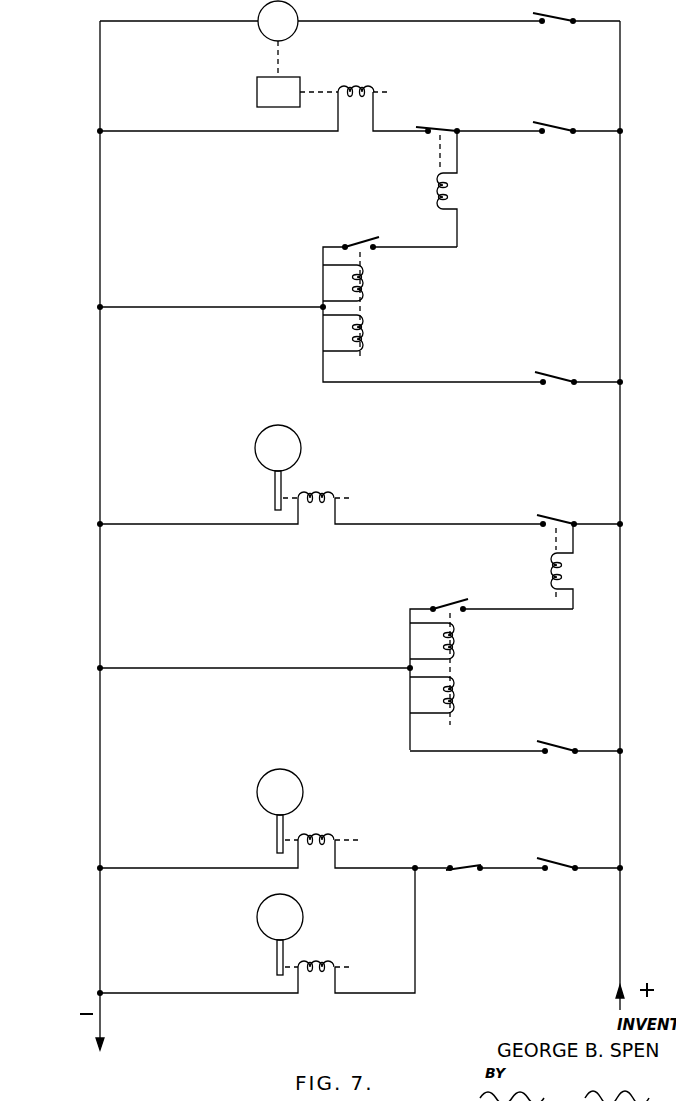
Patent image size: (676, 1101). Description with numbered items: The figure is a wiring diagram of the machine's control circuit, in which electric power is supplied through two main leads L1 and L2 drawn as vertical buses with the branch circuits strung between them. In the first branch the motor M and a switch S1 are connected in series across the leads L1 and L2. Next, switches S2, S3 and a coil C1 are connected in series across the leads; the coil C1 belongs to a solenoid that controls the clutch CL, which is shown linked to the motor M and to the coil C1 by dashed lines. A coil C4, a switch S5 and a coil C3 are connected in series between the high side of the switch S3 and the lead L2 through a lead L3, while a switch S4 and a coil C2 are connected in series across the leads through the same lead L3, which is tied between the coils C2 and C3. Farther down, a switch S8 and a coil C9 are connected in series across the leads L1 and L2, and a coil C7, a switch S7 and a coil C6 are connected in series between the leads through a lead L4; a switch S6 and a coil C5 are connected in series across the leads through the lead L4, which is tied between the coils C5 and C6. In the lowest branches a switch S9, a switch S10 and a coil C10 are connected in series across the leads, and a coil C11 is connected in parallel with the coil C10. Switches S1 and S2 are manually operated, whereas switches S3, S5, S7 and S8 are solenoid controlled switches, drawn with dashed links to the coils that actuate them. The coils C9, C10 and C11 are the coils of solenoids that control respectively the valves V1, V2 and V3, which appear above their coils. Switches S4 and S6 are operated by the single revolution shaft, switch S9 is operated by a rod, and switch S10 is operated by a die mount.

The main lead L1 is at (620, 655).
The main lead L2 is at (100, 590).
The lead L3 is at (198, 307).
The lead L4 is at (212, 668).
The switch S1 is at (554, 31).
The switch S2 is at (554, 121).
The switch S3 is at (438, 121).
The switch S4 is at (556, 368).
The switch S5 is at (360, 234).
The switch S6 is at (557, 737).
The switch S7 is at (449, 596).
The switch S8 is at (557, 510).
The switch S9 is at (557, 854).
The switch S10 is at (464, 856).
The coil C1 is at (356, 80).
The coil C2 is at (362, 333).
The coil C3 is at (362, 283).
The coil C4 is at (460, 189).
The coil C5 is at (446, 695).
The coil C6 is at (446, 641).
The coil C7 is at (575, 566).
The coil C9 is at (316, 485).
The coil C10 is at (318, 828).
The coil C11 is at (319, 955).
The motor M is at (278, 21).
The clutch CL is at (278, 92).
The valve V1 is at (278, 467).
The valve V2 is at (280, 811).
The valve V3 is at (280, 934).